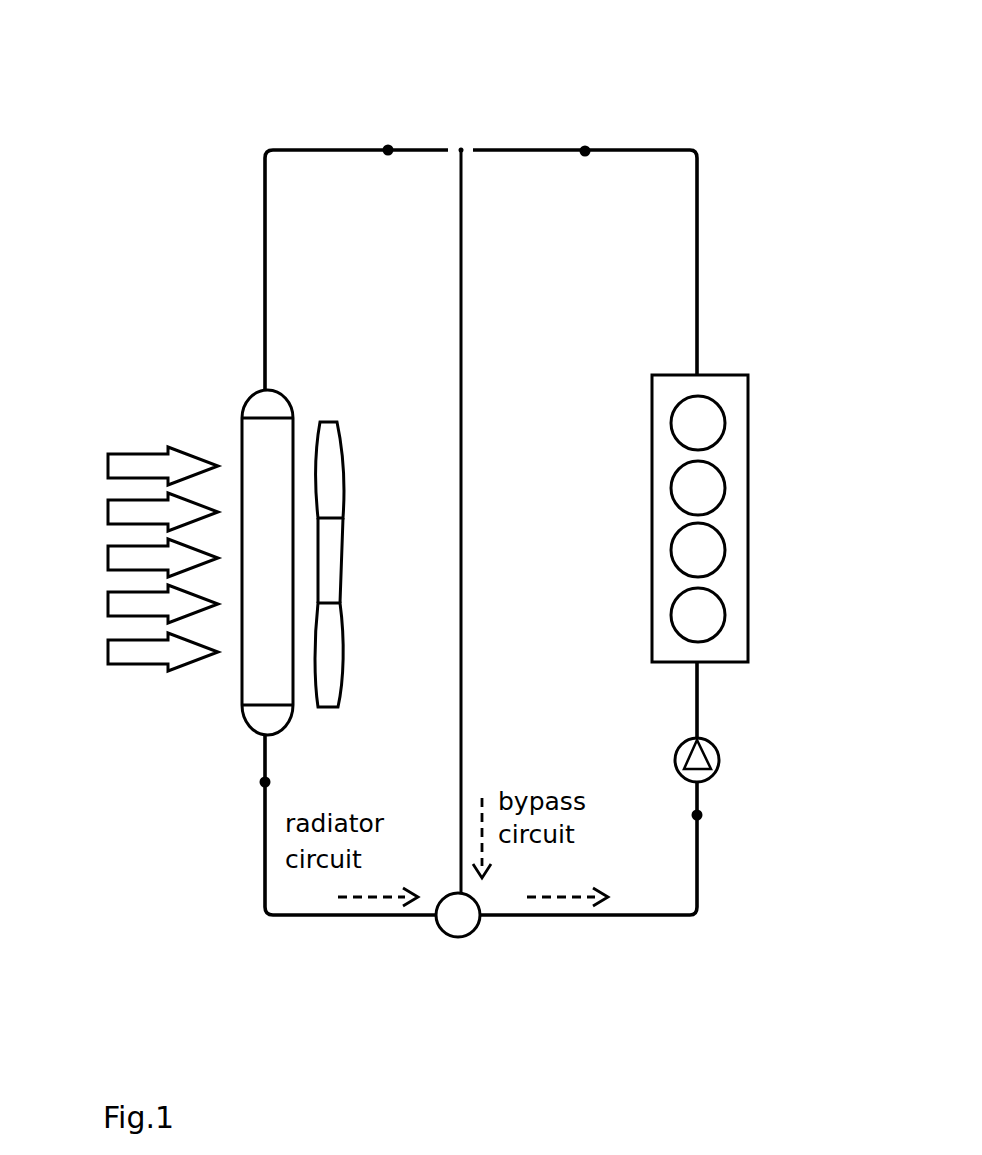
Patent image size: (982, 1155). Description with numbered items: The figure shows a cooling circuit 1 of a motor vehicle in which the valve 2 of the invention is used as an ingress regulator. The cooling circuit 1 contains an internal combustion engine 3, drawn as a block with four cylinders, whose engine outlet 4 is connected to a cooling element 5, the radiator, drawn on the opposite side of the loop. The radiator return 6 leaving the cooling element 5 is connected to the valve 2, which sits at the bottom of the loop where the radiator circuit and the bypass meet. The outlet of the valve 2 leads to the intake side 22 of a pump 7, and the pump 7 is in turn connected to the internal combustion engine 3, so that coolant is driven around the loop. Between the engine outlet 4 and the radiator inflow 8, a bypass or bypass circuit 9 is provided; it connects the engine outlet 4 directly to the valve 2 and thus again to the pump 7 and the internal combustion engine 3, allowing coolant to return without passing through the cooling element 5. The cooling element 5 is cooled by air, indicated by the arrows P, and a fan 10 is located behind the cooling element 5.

The cooling circuit 1 is at (200, 72).
The valve 2 is at (460, 920).
The internal combustion engine 3 is at (727, 455).
The engine outlet 4 is at (585, 151).
The cooling element 5 is at (265, 497).
The radiator return 6 is at (265, 782).
The pump 7 is at (720, 763).
The radiator inflow 8 is at (388, 150).
The bypass circuit 9 is at (463, 393).
The fan 10 is at (325, 475).
The intake side 22 is at (697, 815).
The air P is at (148, 627).